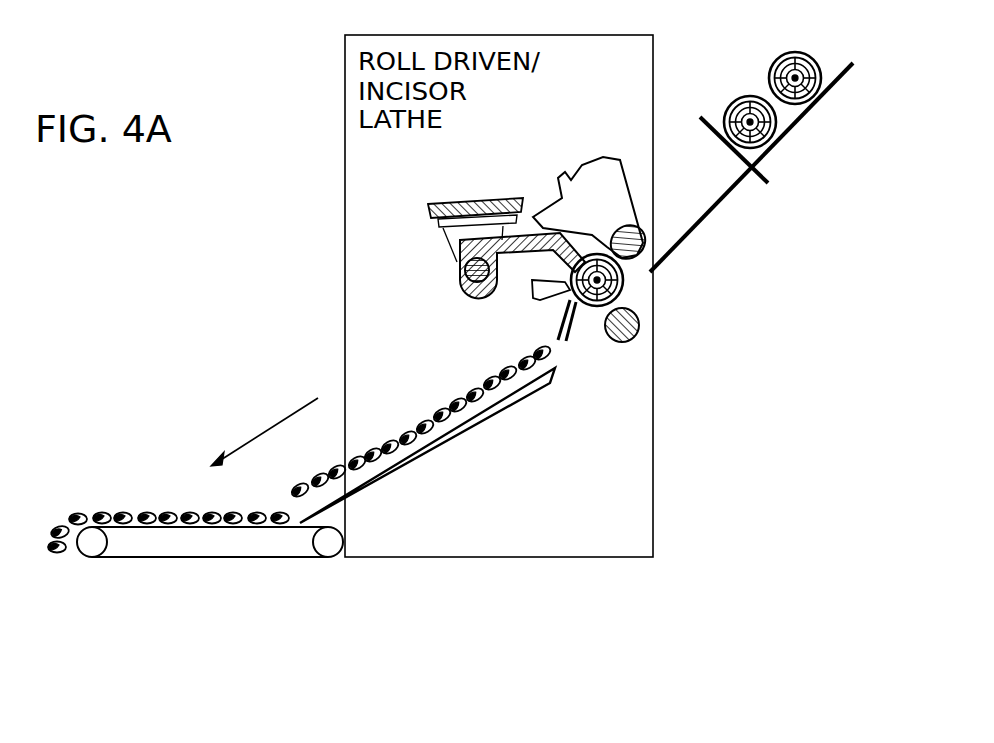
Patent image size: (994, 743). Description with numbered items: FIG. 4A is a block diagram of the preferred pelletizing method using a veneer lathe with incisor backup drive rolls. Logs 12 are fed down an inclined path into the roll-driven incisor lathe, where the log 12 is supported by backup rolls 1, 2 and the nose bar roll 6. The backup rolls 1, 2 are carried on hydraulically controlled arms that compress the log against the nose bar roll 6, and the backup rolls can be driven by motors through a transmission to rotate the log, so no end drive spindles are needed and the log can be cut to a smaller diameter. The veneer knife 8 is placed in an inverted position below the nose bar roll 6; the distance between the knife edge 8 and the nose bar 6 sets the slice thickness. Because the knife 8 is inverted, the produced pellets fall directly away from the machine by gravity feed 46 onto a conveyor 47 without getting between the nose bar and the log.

The backup roll 1 is at (610, 226).
The backup roll 2 is at (637, 334).
The nose bar roll 6 is at (558, 292).
The veneer knife 8 is at (572, 325).
The log 12 is at (780, 50).
The gravity feed 46 is at (463, 437).
The conveyor 47 is at (203, 557).